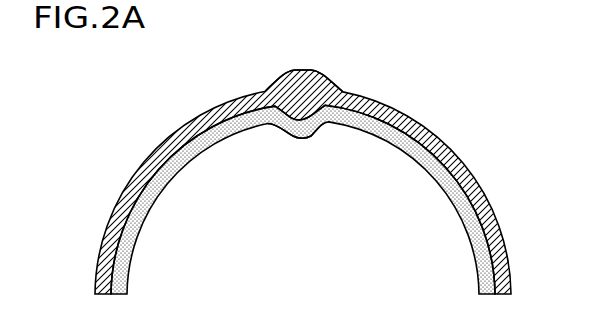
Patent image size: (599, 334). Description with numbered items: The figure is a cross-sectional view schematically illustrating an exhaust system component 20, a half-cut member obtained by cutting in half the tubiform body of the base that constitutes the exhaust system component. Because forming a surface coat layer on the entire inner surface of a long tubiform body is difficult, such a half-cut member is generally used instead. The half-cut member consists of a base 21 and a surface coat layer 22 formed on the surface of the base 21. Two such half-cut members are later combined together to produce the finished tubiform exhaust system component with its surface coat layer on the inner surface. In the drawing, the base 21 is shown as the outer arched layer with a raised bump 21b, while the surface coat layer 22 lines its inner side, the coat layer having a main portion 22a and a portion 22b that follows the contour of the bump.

The exhaust system component (half-cut member) 20 is at (315, 160).
The base 21 is at (331, 160).
The protruding portion of outer layer 21b is at (312, 83).
The surface coat layer 22 is at (328, 161).
The base portion of inner layer 22a is at (412, 144).
The recessed portion of inner layer 22b is at (280, 118).